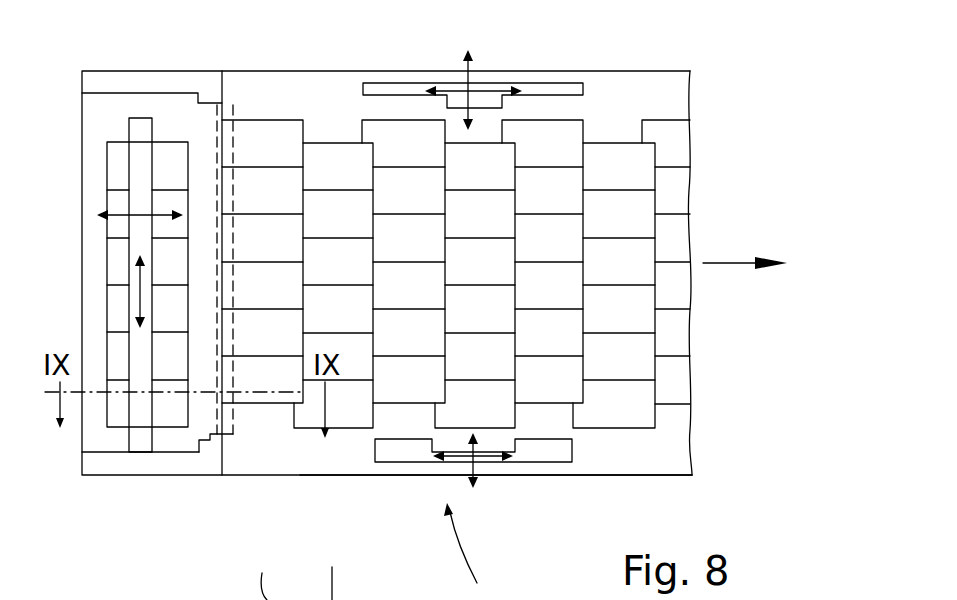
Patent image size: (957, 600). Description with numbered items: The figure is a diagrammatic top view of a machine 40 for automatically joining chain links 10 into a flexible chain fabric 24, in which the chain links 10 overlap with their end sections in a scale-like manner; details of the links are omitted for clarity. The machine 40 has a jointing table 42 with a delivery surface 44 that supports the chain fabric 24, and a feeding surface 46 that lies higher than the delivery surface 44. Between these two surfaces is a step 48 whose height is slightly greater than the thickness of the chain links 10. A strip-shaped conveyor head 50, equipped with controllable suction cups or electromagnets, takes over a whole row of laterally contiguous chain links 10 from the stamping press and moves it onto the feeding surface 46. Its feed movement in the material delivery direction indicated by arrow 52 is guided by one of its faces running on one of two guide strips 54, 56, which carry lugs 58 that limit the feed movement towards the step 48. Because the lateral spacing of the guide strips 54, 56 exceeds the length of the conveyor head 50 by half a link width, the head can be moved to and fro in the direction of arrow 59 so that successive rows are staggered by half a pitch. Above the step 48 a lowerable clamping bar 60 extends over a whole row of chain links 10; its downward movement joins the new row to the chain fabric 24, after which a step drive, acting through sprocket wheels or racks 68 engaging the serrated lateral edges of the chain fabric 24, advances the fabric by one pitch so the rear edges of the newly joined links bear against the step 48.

The chain links 10 is at (672, 148).
The chain fabric 24 is at (676, 254).
The machine 40 is at (495, 551).
The jointing table 42 is at (655, 456).
The delivery surface 44 is at (355, 462).
The feeding surface 46 is at (107, 437).
The step 48 is at (227, 416).
The conveyor head 50 is at (140, 417).
The arrow 52 is at (140, 213).
The guide strip 54 is at (133, 460).
The guide strip 56 is at (125, 85).
The lugs 58 is at (192, 453).
The arrow 59 is at (140, 295).
The clamping bar 60 is at (237, 342).
The sprocket wheels or racks 68 is at (577, 93).